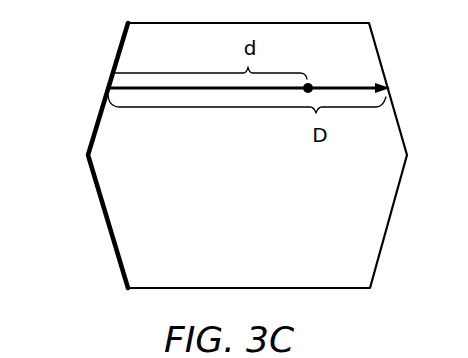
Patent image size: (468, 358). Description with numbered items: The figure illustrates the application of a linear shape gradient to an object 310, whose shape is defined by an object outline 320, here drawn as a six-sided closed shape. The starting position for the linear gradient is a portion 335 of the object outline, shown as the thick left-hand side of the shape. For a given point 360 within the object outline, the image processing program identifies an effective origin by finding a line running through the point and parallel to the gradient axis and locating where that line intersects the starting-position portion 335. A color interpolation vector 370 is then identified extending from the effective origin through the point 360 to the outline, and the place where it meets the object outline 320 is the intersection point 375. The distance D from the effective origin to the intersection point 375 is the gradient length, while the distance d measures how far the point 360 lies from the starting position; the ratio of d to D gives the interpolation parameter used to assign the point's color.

The object 310 is at (54, 284).
The object outline 320 is at (387, 221).
The portion of the object outline 335 is at (96, 124).
The point 360 is at (309, 84).
The color interpolation vector 370 is at (242, 91).
The intersection point 375 is at (391, 88).